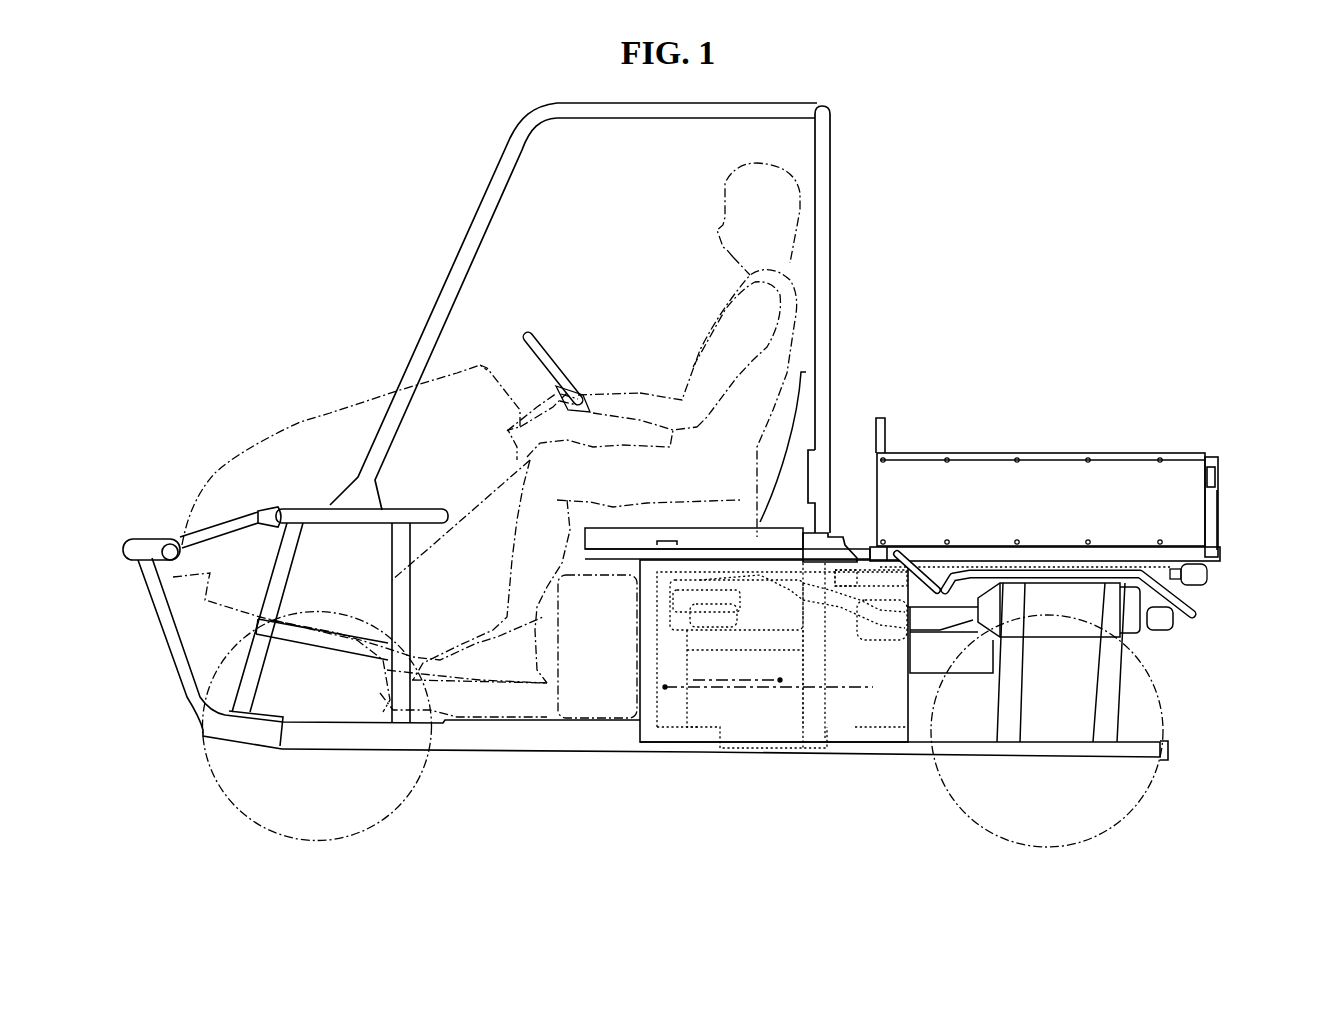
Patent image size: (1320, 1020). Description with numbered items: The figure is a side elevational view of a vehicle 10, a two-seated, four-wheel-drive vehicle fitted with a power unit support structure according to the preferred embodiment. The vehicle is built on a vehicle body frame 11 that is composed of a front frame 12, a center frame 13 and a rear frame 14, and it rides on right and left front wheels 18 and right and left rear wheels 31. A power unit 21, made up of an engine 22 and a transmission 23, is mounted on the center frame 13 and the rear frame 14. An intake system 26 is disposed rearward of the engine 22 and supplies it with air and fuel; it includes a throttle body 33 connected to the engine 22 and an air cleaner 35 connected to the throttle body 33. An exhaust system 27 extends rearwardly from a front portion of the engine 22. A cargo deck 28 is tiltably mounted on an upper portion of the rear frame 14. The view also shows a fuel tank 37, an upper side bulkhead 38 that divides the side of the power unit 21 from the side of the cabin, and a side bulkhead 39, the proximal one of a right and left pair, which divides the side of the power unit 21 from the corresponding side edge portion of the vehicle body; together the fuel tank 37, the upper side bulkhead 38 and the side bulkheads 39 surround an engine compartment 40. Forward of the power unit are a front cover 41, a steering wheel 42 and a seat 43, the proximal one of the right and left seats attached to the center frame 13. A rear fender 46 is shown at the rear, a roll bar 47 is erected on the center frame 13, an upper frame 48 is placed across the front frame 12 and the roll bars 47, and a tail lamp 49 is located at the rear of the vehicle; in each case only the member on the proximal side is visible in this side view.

The vehicle 10 is at (245, 155).
The vehicle body frame 11 is at (573, 757).
The front frame 12 is at (297, 503).
The center frame 13 is at (660, 765).
The rear frame 14 is at (1125, 695).
The front wheels 18 is at (212, 773).
The power unit 21 is at (836, 740).
The engine 22 is at (777, 587).
The transmission 23 is at (757, 705).
The intake system 26 is at (853, 587).
The exhaust system 27 is at (1060, 637).
The cargo deck 28 is at (1110, 447).
The rear wheels 31 is at (1125, 820).
The throttle body 33 is at (848, 600).
The air cleaner 35 is at (942, 635).
The fuel tank 37 is at (608, 725).
The upper side bulkhead 38 is at (805, 390).
The side bulkhead 39 is at (697, 753).
The engine compartment 40 is at (738, 767).
The front cover 41 is at (340, 410).
The steering wheel 42 is at (548, 362).
The seat 43 is at (765, 515).
The rear fender 46 is at (1192, 603).
The roll bar 47 is at (827, 252).
The upper frame 48 is at (470, 240).
The tail lamp 49 is at (1207, 572).